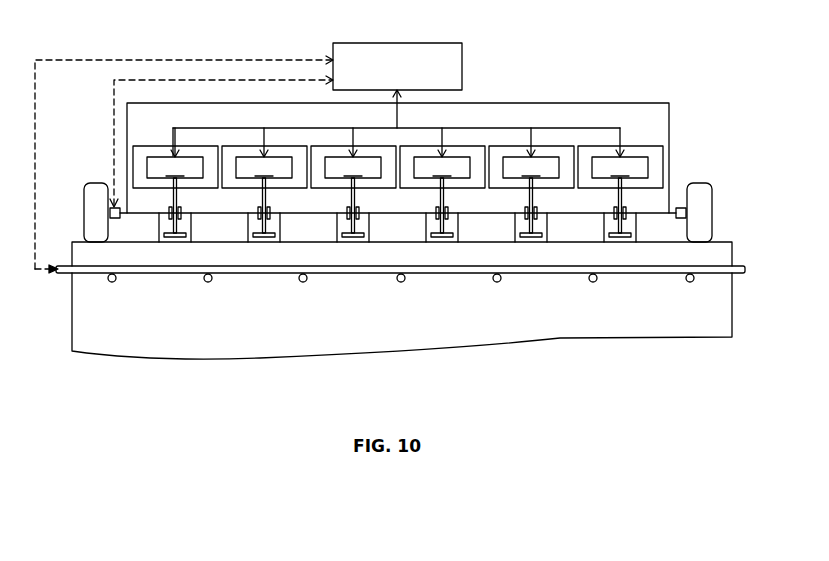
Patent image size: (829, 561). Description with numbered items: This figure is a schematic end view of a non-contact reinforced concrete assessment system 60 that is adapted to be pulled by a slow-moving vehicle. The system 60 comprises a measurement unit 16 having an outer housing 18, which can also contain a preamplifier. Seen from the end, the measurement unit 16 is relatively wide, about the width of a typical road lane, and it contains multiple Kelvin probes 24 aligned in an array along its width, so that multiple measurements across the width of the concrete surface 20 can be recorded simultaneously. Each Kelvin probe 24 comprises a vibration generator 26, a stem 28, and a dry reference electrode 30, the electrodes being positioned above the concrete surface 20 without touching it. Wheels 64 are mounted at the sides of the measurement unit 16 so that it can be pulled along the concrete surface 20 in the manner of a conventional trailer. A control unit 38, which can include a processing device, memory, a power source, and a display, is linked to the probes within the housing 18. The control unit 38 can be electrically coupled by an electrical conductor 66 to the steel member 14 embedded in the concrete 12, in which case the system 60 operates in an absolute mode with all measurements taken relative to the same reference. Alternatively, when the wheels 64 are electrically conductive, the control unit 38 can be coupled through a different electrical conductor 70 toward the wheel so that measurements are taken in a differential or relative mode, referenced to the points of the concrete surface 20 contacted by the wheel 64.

The concrete 12 is at (112, 347).
The steel member 14 is at (652, 276).
The measurement unit 16 is at (420, 185).
The outer housing 18 is at (540, 103).
The concrete surface 20 is at (717, 240).
The Kelvin probe 24 is at (665, 168).
The vibration generator 26 is at (397, 167).
The stem 28 is at (262, 203).
The dry reference electrode 30 is at (175, 238).
The control unit 38 is at (388, 76).
The non-contact reinforced concrete assessment system 60 is at (741, 66).
The wheels 64 is at (80, 193).
The electrical conductor 66 is at (152, 59).
The electrical conductor 70 is at (216, 79).